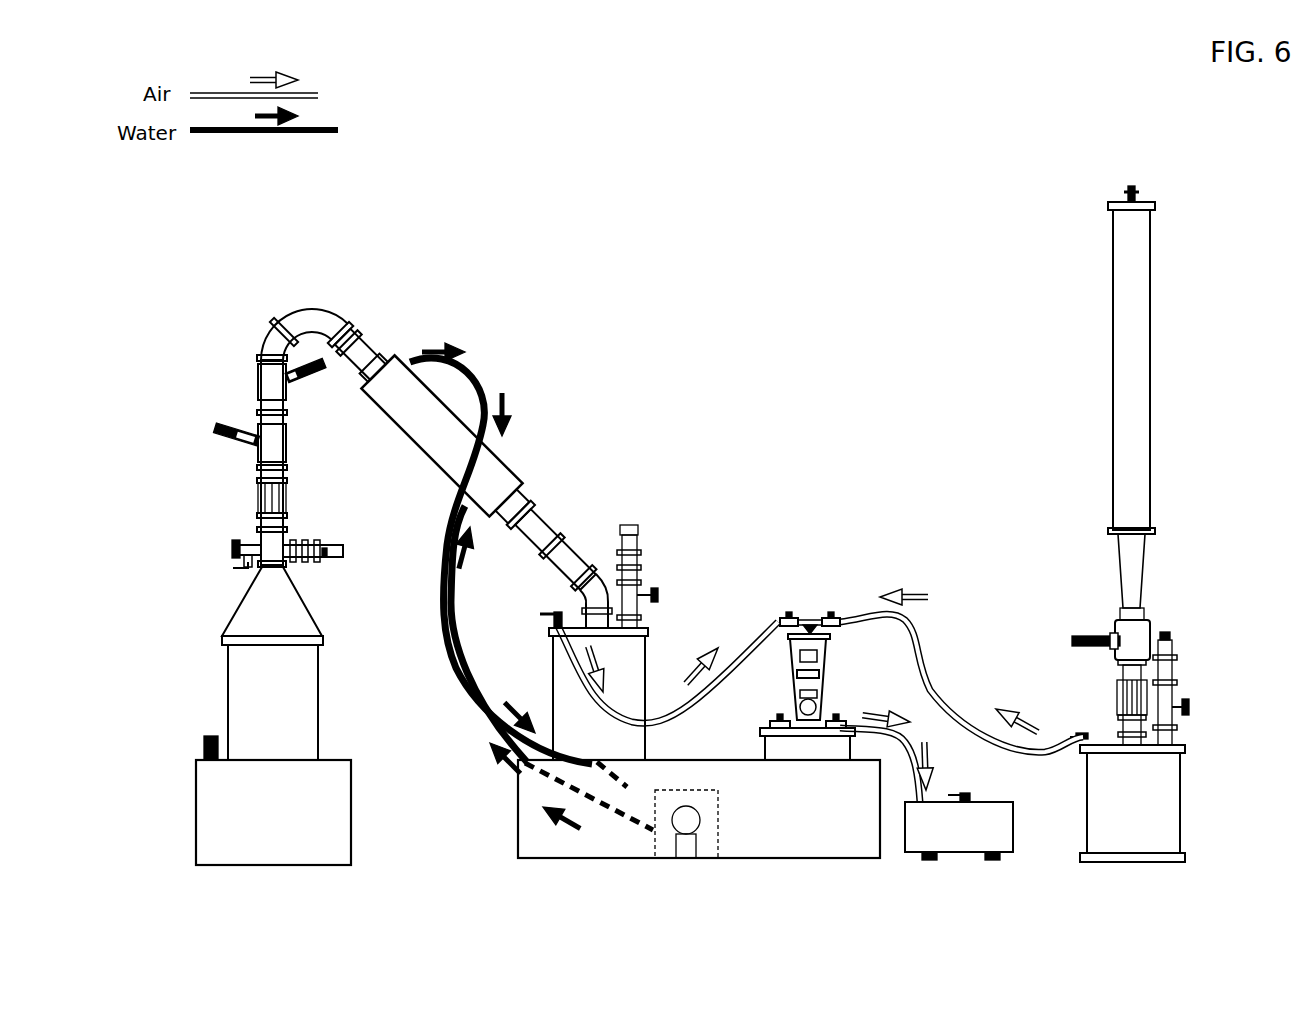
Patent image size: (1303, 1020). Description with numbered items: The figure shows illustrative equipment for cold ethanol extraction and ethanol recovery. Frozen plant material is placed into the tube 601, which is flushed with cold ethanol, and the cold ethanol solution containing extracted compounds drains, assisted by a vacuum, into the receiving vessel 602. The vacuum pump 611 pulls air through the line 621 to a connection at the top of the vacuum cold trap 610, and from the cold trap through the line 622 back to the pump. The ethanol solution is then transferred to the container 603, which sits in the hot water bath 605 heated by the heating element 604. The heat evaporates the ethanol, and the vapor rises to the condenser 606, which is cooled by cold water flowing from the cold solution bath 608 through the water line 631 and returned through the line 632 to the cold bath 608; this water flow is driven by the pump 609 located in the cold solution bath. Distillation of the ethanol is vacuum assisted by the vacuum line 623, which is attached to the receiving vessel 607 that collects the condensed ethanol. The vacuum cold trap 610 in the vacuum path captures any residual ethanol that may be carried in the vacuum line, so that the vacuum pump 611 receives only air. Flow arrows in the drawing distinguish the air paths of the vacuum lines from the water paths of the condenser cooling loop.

The tube 601 is at (1152, 288).
The receiving vessel 602 is at (1185, 818).
The container 603 is at (226, 683).
The heating element 604 is at (203, 750).
The hot water bath 605 is at (197, 830).
The condenser 606 is at (405, 442).
The receiving vessel 607 is at (650, 653).
The cold solution bath 608 is at (518, 832).
The pump 609 is at (722, 820).
The vacuum cold trap 610 is at (768, 745).
The vacuum pump 611 is at (1013, 823).
The line 621 is at (927, 665).
The line 622 is at (918, 745).
The vacuum line 623 is at (735, 642).
The water line 631 is at (495, 735).
The line 632 is at (480, 372).